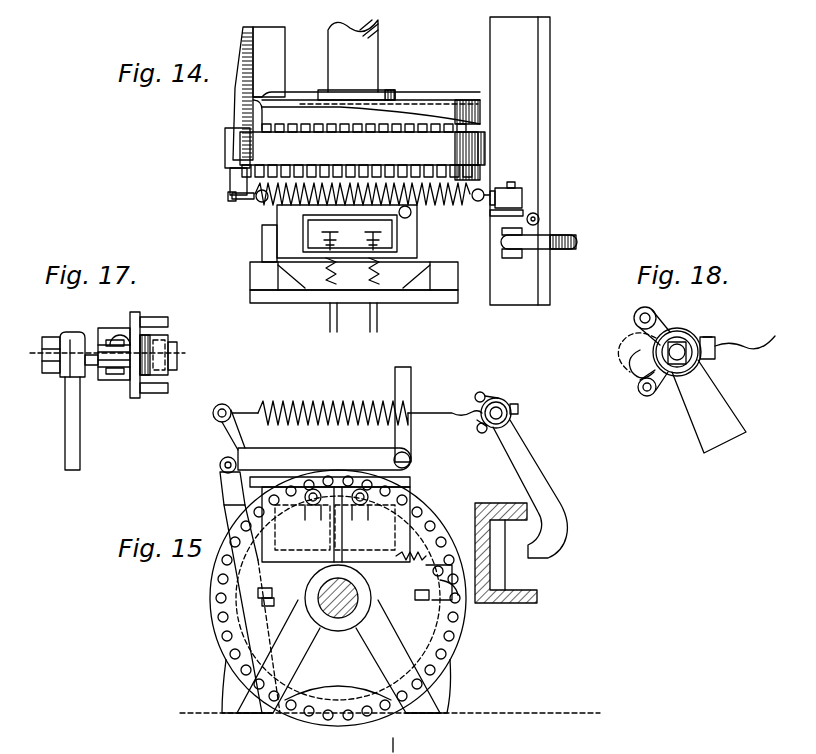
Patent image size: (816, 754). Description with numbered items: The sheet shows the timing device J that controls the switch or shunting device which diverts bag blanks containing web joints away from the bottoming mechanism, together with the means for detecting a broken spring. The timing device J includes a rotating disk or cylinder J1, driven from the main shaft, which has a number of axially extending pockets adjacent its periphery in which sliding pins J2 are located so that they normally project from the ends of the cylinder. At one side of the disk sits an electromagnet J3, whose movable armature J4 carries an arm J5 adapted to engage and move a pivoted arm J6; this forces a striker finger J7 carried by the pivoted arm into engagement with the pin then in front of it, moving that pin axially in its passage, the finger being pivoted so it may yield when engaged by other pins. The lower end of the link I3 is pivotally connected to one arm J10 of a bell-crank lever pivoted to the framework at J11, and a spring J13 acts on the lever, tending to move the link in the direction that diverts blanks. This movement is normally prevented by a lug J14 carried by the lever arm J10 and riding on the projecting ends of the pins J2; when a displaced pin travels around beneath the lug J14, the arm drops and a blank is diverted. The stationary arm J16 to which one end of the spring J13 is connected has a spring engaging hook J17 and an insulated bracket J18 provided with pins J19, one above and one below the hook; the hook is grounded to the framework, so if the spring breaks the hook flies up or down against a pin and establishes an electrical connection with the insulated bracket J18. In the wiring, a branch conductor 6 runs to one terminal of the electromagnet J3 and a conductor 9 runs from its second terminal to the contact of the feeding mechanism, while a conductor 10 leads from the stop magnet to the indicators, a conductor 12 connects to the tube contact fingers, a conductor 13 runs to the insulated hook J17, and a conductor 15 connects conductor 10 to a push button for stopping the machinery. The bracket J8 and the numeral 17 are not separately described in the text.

In FIG. 14, the timing device J is at (331, 114).
In FIG. 14, the rotating disk or cylinder J1 is at (362, 148).
In FIG. 15, the rotating disk or cylinder J1 is at (437, 510).
In FIG. 14, the sliding pins J2 is at (392, 121).
In FIG. 15, the sliding pins J2 is at (452, 563).
In FIG. 14, the electromagnet J3 is at (406, 257).
In FIG. 14, the movable armature J4 is at (408, 230).
In FIG. 14, the arm of armature J5 is at (262, 236).
In FIG. 14, the pivoted arm J6 is at (292, 200).
In FIG. 15, the pivoted arm J6 is at (430, 595).
In FIG. 15, the striker finger J7 is at (458, 605).
In FIG. 15, the bracket J8 is at (452, 572).
In FIG. 15, the arm of bell-crank lever J10 is at (308, 462).
In FIG. 15, the pivot of bell-crank lever J11 is at (220, 468).
In FIG. 14, the spring J13 is at (372, 194).
In FIG. 15, the spring J13 is at (300, 400).
In FIG. 15, the lug J14 is at (350, 470).
In FIG. 17, the stationary arm J16 is at (70, 430).
In FIG. 18, the stationary arm J16 is at (718, 408).
In FIG. 15, the stationary arm J16 is at (530, 468).
In FIG. 17, the spring engaging hook J17 is at (180, 352).
In FIG. 17, the insulated bracket J18 is at (107, 330).
In FIG. 18, the insulated bracket J18 is at (688, 334).
In FIG. 17, the pins J19 is at (156, 318).
In FIG. 18, the pins J19 is at (636, 318).
In FIG. 15, the link I3 is at (412, 382).
In FIG. 14, the conductor 10 is at (356, 147).
In FIG. 15, the conductor 12 is at (220, 432).
In FIG. 14, the conductor 13 is at (492, 213).
In FIG. 14, the conductor 15 is at (476, 54).
In FIG. 18, the pawl 17 is at (600, 356).
In FIG. 14, the branch conductor 6 is at (330, 268).
In FIG. 14, the conductor 9 is at (374, 270).
In FIG. 15, the conductor 9 is at (408, 552).